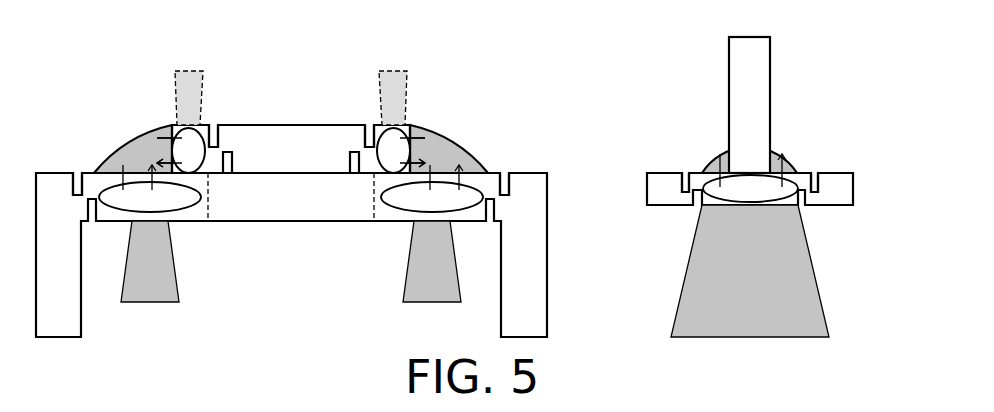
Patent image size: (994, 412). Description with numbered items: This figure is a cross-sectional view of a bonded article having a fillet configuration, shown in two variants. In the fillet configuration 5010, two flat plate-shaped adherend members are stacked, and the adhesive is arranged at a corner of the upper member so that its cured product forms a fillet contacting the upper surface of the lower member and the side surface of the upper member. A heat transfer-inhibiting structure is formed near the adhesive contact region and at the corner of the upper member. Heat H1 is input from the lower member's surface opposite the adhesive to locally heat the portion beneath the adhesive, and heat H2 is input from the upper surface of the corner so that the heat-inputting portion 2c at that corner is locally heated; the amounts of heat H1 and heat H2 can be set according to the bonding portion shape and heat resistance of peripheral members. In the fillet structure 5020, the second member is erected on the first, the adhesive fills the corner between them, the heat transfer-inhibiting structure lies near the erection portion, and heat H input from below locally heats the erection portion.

The fillet configuration 5010 is at (530, 50).
The fillet structure 5020 is at (835, 50).
The heat-inputting portion 2c is at (178, 130).
The heat H1 is at (179, 287).
The heat H2 is at (177, 93).
The heat H is at (812, 283).